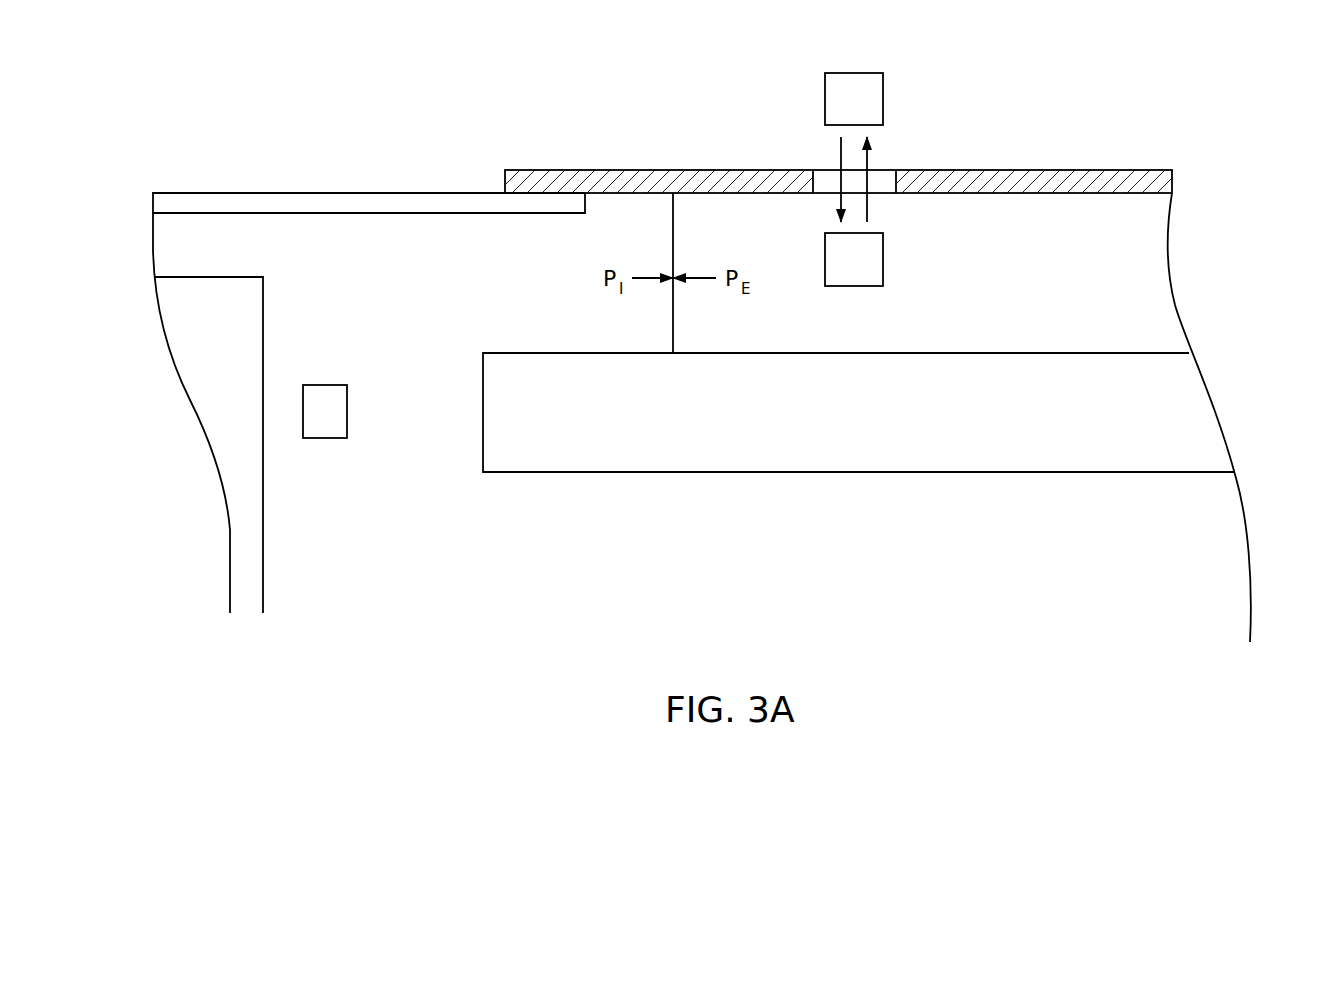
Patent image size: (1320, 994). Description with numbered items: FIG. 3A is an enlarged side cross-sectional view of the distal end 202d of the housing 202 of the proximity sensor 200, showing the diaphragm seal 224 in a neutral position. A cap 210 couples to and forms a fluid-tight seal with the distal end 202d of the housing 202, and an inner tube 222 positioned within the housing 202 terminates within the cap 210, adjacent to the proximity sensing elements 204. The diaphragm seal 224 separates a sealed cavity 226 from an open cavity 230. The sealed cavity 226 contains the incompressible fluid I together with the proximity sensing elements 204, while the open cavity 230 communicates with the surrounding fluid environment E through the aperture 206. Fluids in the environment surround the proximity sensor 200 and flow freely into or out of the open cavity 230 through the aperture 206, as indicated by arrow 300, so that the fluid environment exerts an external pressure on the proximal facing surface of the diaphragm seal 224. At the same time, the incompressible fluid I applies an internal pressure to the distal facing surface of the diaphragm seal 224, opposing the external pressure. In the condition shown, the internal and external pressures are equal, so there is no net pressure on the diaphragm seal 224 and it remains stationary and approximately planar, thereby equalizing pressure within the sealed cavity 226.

The proximity sensor 200 is at (318, 66).
The housing 202 is at (1110, 170).
The distal end of the housing 202d is at (503, 138).
The proximity sensing elements 204 is at (240, 452).
The aperture 206 is at (885, 168).
The cap 210 is at (358, 192).
The inner tube 222 is at (735, 472).
The diaphragm seal 224 is at (672, 228).
The sealed cavity 226 is at (352, 283).
The open cavity 230 is at (1034, 270).
The arrow 300 is at (840, 148).